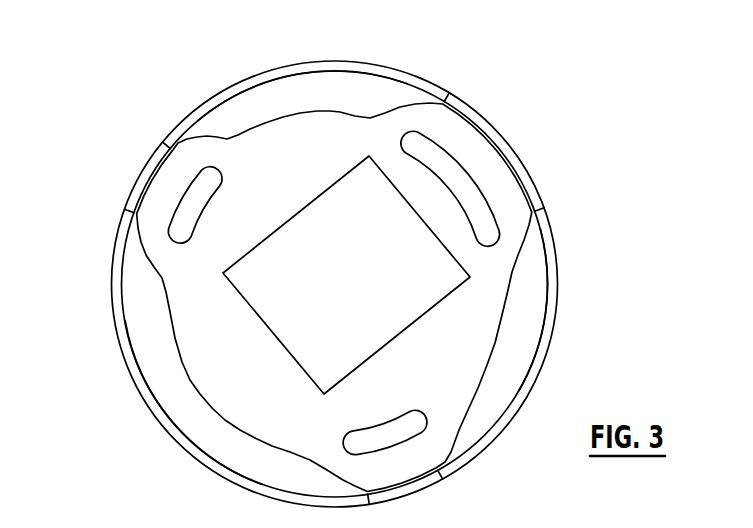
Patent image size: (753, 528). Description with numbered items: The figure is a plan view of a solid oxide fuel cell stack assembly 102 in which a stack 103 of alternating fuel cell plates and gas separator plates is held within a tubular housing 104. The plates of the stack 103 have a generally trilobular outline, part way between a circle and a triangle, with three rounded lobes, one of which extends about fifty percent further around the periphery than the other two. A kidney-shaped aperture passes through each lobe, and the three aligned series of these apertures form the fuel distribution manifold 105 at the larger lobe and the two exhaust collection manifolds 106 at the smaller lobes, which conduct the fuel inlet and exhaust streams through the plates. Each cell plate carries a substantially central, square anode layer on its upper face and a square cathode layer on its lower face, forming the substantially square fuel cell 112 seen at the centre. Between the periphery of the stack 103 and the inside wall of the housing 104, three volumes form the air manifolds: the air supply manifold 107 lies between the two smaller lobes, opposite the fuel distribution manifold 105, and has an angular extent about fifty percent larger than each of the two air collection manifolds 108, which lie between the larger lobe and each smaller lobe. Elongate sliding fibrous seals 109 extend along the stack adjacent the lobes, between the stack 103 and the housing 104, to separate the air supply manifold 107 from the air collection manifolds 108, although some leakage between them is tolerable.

The solid oxide fuel cell stack assembly 102 is at (558, 54).
The stack 103 is at (497, 344).
The tubular housing 104 is at (287, 62).
The fuel distribution manifold 105 is at (475, 172).
The exhaust collection manifolds 106 is at (190, 203).
The air supply manifold 107 is at (178, 392).
The air collection manifolds 108 is at (250, 112).
The sliding fibrous seals 109 is at (475, 122).
The fuel cell 112 is at (346, 275).